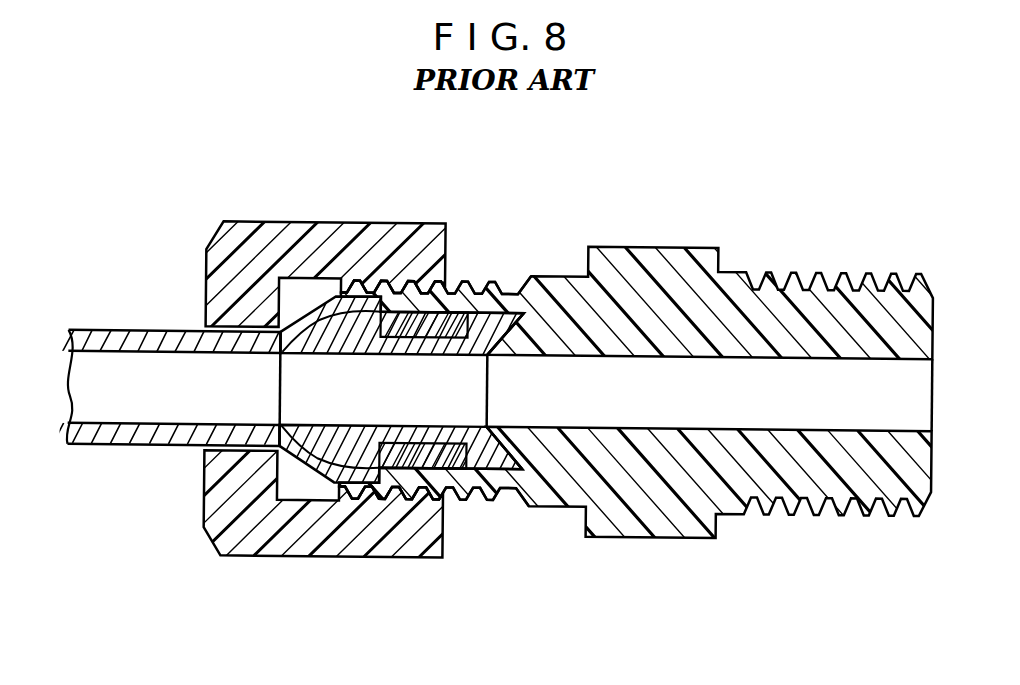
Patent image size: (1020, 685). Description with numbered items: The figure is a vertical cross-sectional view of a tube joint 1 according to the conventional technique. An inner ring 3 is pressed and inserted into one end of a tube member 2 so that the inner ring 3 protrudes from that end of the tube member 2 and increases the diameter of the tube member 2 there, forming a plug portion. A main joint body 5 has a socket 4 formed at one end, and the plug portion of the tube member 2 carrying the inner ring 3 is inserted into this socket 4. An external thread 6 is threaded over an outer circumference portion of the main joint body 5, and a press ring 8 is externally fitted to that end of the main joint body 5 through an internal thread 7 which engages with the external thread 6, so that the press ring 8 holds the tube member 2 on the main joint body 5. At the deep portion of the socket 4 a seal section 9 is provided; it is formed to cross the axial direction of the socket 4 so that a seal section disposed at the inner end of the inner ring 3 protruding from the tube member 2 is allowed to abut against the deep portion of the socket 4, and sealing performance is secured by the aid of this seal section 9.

The tube joint 1 is at (554, 385).
The tube member 2 is at (115, 441).
The inner ring 3 is at (328, 467).
The socket 4 is at (449, 321).
The main joint body 5 is at (683, 515).
The external thread 6 is at (395, 497).
The internal thread 7 is at (383, 283).
The press ring 8 is at (296, 237).
The seal section 9 is at (506, 452).